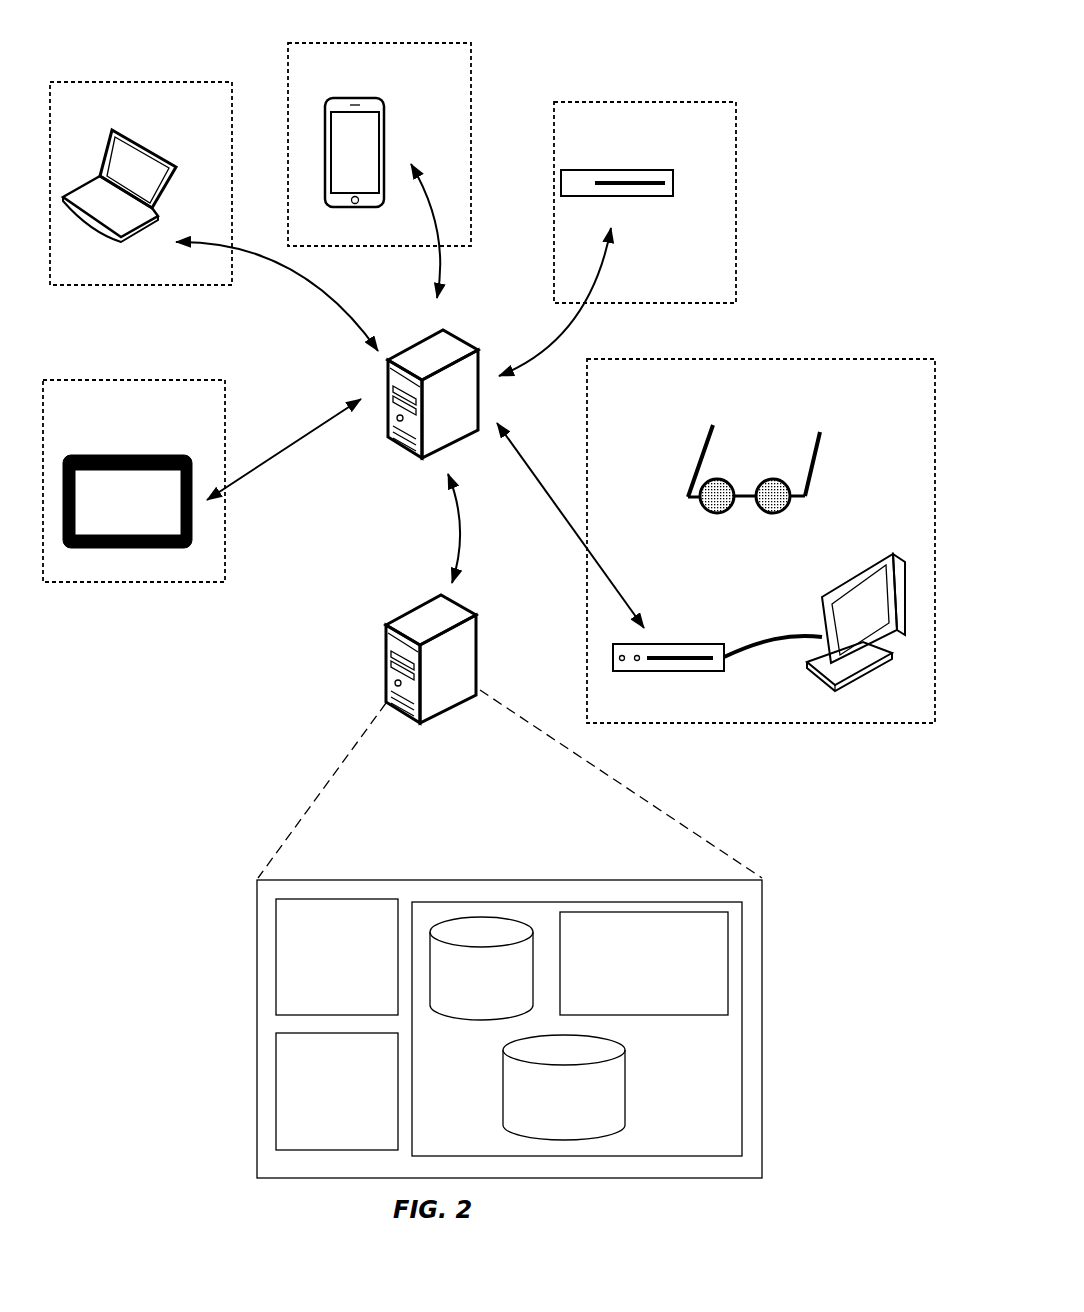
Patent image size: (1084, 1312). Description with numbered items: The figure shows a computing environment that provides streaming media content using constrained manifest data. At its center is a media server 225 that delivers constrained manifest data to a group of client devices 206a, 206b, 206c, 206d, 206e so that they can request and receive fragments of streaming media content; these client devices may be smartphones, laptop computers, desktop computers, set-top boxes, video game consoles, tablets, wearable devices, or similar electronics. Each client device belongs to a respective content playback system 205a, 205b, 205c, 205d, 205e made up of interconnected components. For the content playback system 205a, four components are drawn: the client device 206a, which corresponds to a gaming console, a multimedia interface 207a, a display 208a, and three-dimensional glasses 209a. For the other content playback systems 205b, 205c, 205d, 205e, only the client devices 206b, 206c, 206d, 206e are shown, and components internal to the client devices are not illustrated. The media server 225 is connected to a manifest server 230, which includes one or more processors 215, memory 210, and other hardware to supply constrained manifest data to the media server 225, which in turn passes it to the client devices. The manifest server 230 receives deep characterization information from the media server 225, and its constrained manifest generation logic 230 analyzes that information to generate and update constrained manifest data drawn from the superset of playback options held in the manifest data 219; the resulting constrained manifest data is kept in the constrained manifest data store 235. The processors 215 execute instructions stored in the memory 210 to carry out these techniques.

The content playback system 205a is at (884, 359).
The content playback system 205b is at (685, 102).
The content playback system 205c is at (181, 82).
The content playback system 205d is at (420, 43).
The content playback system 205e is at (174, 380).
The client device 206a is at (695, 644).
The client device 206b is at (643, 170).
The client device 206c is at (142, 140).
The client device 206d is at (356, 97).
The client device 206e is at (140, 455).
The multimedia interface 207a is at (748, 654).
The display 208a is at (848, 574).
The 3-D glasses 209a is at (715, 422).
The media server 225 is at (463, 348).
The manifest server 230 is at (462, 612).
The processors 215 is at (323, 976).
The memory 210 is at (323, 1109).
The manifest data 219 is at (481, 968).
The constrained manifest data store 235 is at (564, 1087).